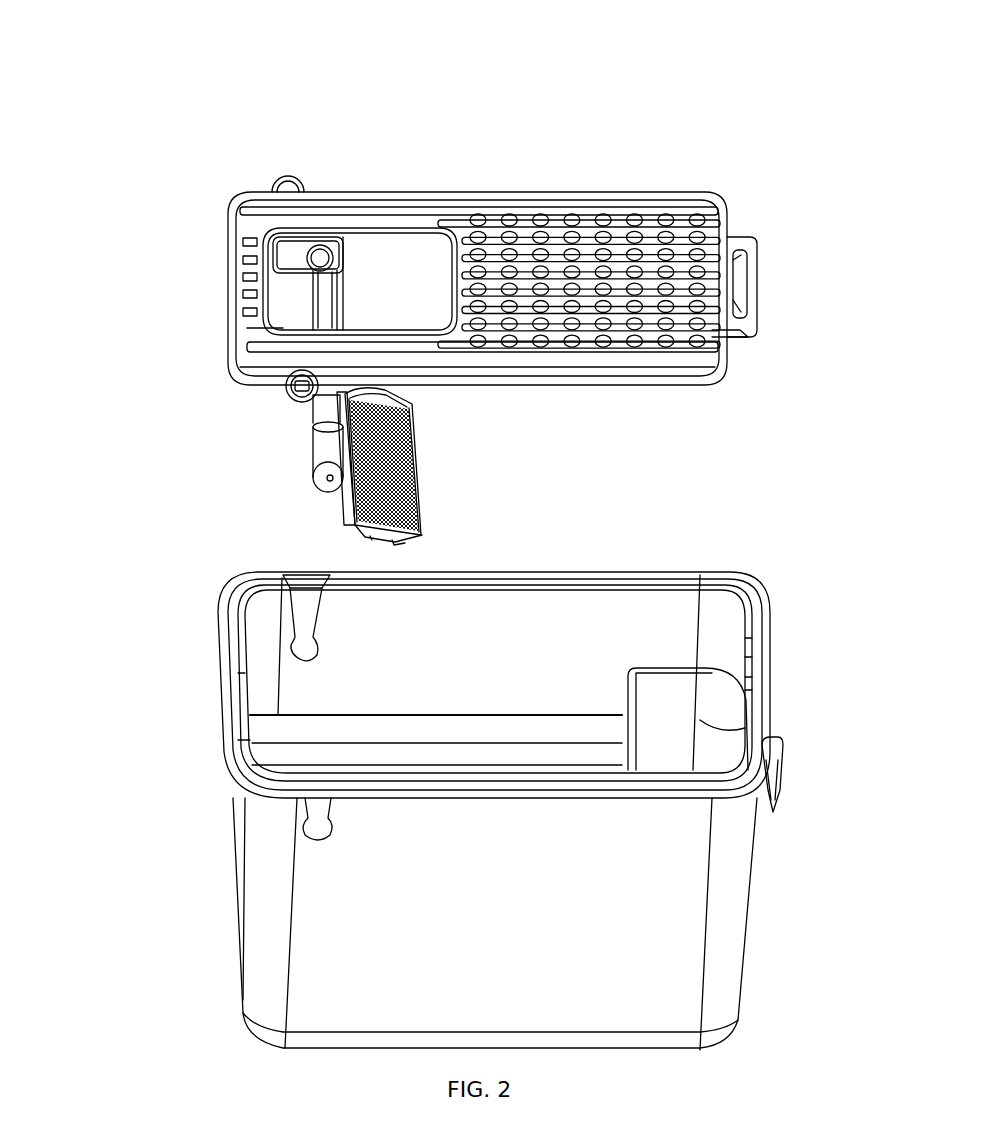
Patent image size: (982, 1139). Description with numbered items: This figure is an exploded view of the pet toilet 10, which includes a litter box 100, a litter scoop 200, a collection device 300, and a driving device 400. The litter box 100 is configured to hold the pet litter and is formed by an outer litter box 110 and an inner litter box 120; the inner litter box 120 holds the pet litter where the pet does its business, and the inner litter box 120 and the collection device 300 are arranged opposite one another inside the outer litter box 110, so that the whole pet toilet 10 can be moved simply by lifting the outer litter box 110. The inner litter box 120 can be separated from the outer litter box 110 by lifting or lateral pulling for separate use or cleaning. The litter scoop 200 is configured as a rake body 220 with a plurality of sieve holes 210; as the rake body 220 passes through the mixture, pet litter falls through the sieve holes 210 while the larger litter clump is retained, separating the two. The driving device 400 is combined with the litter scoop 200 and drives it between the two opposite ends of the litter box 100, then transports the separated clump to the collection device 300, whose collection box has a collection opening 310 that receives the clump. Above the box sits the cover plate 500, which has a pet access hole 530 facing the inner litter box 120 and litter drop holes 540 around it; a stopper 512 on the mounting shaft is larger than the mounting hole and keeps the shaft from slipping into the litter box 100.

The pet toilet 10 is at (436, 100).
The litter box 100 is at (143, 740).
The outer litter box 110 is at (300, 815).
The inner litter box 120 is at (290, 740).
The litter scoop 200 is at (345, 515).
The sieve holes 210 is at (425, 513).
The rake body 220 is at (410, 546).
The collection device 300 is at (720, 704).
The collection opening 310 is at (785, 748).
The driving device 400 is at (325, 440).
The cover plate 500 is at (292, 221).
The stopper 512 is at (263, 178).
The pet access hole 530 is at (258, 292).
The litter drop holes 540 is at (750, 328).